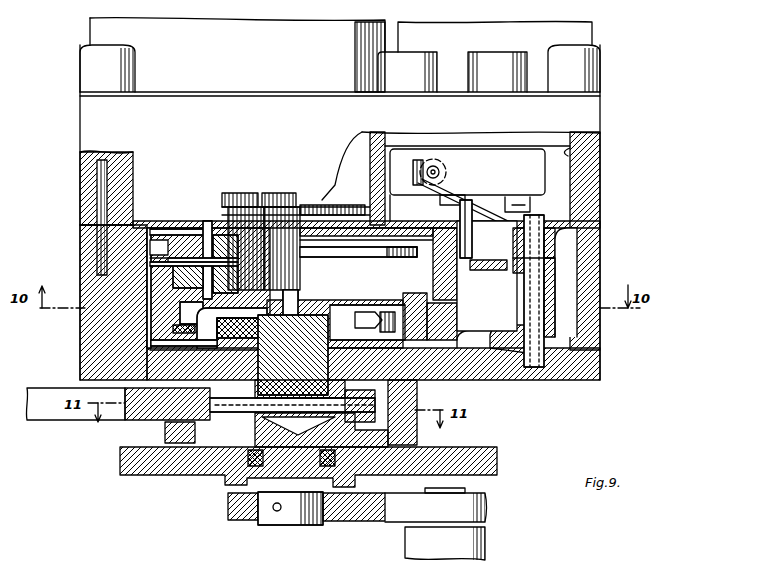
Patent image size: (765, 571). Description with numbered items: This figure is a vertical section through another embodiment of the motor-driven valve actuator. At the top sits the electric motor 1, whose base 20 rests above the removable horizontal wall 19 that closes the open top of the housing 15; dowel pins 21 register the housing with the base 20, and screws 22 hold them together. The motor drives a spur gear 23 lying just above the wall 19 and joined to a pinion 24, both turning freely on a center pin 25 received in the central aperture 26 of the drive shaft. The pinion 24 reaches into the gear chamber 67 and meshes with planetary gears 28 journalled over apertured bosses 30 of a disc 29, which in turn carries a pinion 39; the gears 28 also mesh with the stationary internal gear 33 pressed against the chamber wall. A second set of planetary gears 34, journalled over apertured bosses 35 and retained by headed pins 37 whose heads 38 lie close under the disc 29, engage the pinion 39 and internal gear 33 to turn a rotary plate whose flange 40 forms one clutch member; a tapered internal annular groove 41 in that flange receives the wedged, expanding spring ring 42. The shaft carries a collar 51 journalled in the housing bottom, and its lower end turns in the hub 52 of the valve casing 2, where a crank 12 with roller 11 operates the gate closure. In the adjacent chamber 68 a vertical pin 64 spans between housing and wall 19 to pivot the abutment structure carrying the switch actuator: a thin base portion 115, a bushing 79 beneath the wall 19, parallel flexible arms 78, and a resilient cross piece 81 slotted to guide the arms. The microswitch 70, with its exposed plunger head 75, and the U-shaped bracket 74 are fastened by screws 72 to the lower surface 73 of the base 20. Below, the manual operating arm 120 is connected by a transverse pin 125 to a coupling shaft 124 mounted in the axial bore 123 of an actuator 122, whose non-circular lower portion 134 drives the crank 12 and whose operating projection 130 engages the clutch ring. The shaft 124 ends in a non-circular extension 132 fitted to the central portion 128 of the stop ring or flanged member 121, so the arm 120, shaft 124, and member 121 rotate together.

The electric motor 1 is at (90, 32).
The casing 2 is at (148, 466).
The roller 11 is at (486, 543).
The crank 12 is at (360, 512).
The housing 15 is at (612, 359).
The horizontal wall 19 is at (595, 223).
The base 20 is at (90, 125).
The dowel pins 21 is at (96, 188).
The screws 22 is at (88, 68).
The spur gear 23 is at (256, 194).
The pinion 24 is at (312, 205).
The center pin 25 is at (293, 194).
The central aperture 26 is at (377, 178).
The planetary gears 28 is at (170, 222).
The disc or plate 29 is at (384, 252).
The apertured bosses 30 is at (203, 230).
The stationary internal gear 33 is at (148, 228).
The planetary gears 34 is at (180, 270).
The apertured boss 35 is at (185, 282).
The headed pins 37 is at (150, 292).
The heads 38 is at (175, 250).
The pinion 39 is at (312, 268).
The flange 40 is at (420, 316).
The internal annular groove 41 is at (178, 328).
The spring ring 42 is at (195, 340).
The collar 51 is at (207, 225).
The hub 52 is at (218, 212).
The pin 64 is at (530, 303).
The chamber 67 is at (344, 235).
The chamber 68 is at (487, 276).
The microswitch 70 is at (507, 152).
The screws 72 is at (531, 207).
The lower surface 73 is at (590, 160).
The U-shaped bracket 74 is at (396, 192).
The plunger head 75 is at (436, 170).
The flexible arms 78 is at (460, 186).
The bushing or sleeve 79 is at (553, 243).
The resilient cross piece 81 is at (473, 225).
The base portion 115 is at (575, 258).
The manual operating arm 120 is at (48, 388).
The stop ring or flanged member 121 is at (148, 345).
The actuator 122 is at (166, 424).
The axial bore 123 is at (330, 380).
The coupling shaft 124 is at (299, 332).
The transverse pin 125 is at (360, 402).
The central portion 128 is at (364, 292).
The operating projection 130 is at (388, 310).
The non-circular extension 132 is at (312, 296).
The non-circular lower portion 134 is at (278, 513).